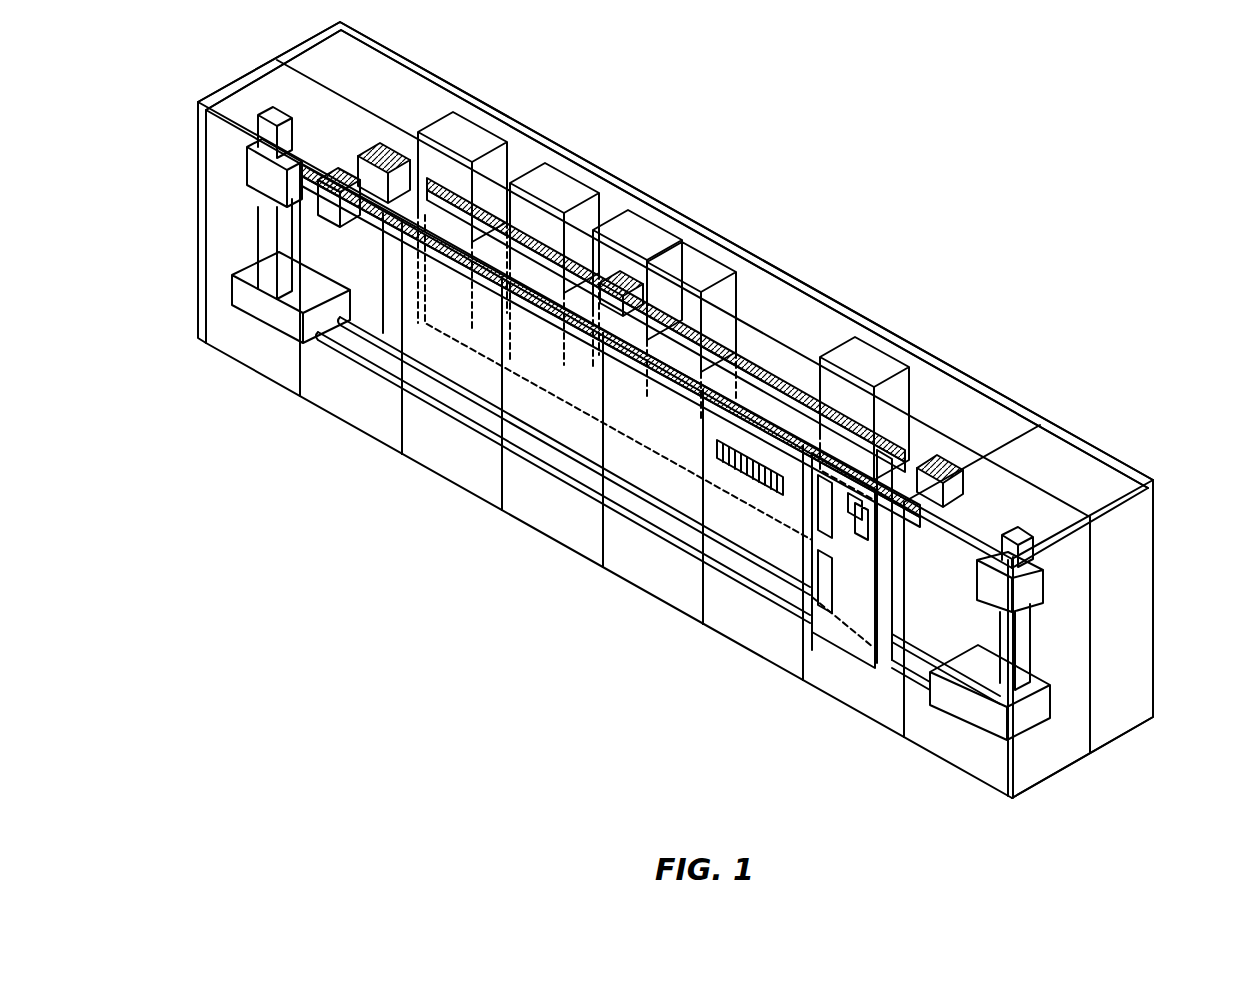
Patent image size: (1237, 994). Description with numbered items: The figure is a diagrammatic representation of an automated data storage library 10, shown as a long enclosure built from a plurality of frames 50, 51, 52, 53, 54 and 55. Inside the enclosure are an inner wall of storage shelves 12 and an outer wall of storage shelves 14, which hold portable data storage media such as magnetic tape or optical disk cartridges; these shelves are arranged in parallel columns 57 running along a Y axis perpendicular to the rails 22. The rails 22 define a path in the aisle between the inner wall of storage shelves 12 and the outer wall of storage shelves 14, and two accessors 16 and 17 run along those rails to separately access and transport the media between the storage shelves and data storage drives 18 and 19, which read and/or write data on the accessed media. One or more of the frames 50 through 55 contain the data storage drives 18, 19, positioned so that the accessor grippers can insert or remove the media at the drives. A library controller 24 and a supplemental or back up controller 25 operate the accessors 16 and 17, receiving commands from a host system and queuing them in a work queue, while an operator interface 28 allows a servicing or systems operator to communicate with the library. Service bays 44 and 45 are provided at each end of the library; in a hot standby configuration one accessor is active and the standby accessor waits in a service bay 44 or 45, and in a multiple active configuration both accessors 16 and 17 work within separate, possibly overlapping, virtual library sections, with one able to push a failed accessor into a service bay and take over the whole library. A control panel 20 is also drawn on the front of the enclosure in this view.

The automated data storage library 10 is at (778, 148).
The inner wall of storage shelves 12 is at (495, 283).
The outer wall of storage shelves 14 is at (482, 380).
The accessor 16 is at (250, 162).
The accessor 17 is at (1050, 585).
The data storage drive 18 is at (638, 222).
The data storage drive 19 is at (688, 247).
The control panel 20 is at (862, 625).
The rails 22 is at (382, 352).
The library controller 24 is at (470, 125).
The supplemental or back up controller 25 is at (878, 357).
The operator interface 28 is at (552, 172).
The service bay 44 is at (283, 60).
The service bay 45 is at (1156, 540).
The frame 50 is at (358, 428).
The frame 51 is at (483, 495).
The frame 52 is at (590, 565).
The frame 53 is at (660, 603).
The frame 54 is at (770, 666).
The frame 55 is at (888, 730).
The columns 57 is at (773, 487).